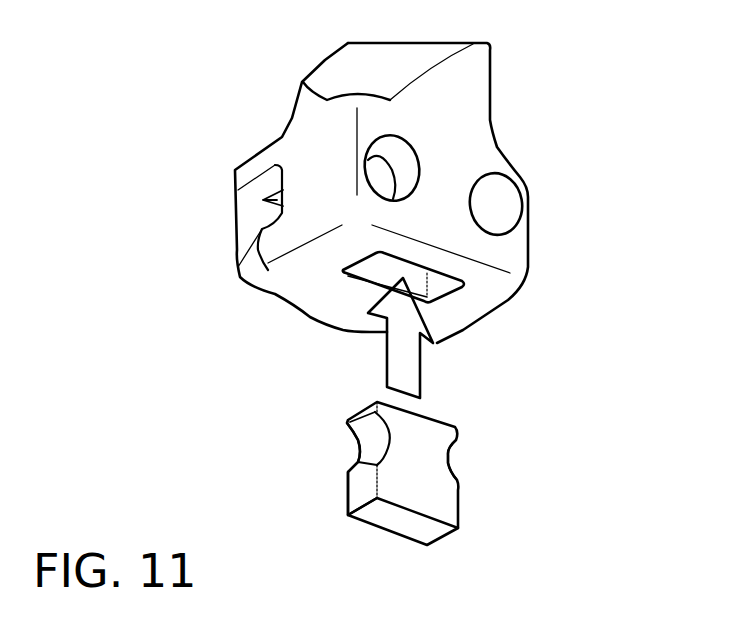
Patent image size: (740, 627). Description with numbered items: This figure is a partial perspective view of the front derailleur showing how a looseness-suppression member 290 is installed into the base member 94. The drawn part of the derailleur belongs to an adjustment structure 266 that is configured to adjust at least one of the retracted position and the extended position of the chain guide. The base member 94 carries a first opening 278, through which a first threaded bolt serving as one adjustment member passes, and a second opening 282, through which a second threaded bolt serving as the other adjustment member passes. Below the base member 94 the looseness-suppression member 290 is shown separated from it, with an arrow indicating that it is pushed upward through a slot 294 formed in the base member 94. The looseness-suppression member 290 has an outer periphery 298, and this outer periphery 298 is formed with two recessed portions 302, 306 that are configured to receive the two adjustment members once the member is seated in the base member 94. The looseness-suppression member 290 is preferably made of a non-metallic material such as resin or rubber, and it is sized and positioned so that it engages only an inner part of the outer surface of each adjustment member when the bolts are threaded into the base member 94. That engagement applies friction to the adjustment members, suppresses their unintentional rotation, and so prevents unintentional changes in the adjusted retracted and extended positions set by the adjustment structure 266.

The base member 94 is at (333, 68).
The adjustment structure 266 is at (551, 214).
The first opening 278 is at (367, 143).
The second opening 282 is at (513, 187).
The looseness-suppression member 290 is at (433, 433).
The slot 294 is at (353, 280).
The outer periphery 298 is at (363, 485).
The first recessed portion 302 is at (360, 433).
The second recessed portion 306 is at (448, 462).